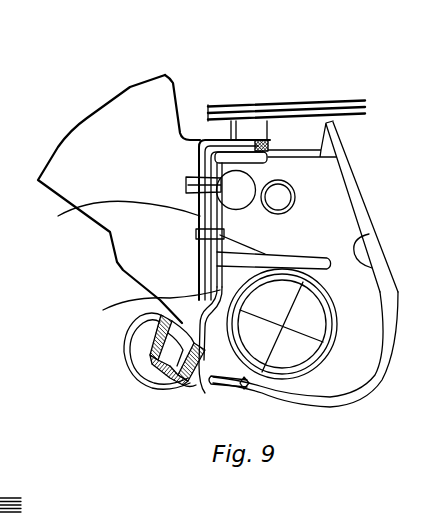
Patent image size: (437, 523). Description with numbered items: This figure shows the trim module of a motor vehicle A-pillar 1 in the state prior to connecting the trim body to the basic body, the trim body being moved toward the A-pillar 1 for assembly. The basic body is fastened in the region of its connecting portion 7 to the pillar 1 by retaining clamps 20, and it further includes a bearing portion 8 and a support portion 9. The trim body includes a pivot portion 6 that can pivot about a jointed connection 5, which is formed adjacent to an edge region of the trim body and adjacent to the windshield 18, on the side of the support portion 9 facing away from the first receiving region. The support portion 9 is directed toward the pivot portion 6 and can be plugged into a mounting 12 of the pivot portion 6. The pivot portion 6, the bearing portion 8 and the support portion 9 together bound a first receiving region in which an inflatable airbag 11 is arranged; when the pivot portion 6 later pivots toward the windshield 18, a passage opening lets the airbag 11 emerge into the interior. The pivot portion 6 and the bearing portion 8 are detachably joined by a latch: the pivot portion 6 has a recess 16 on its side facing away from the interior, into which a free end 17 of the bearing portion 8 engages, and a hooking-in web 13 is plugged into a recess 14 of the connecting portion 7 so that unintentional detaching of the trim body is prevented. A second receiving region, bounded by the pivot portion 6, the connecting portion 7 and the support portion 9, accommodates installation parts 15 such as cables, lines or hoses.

The A-pillar 1 is at (48, 130).
The jointed connection 5 is at (350, 131).
The pivot portion 6 is at (372, 213).
The connecting portion 7 is at (60, 218).
The bearing portion 8 is at (156, 314).
The support portion 9 is at (300, 258).
The airbag 11 is at (320, 322).
The mounting 12 is at (363, 271).
The hooking-in web 13 is at (312, 158).
The recess 14 is at (267, 140).
The installation parts 15 is at (240, 203).
The recess 16 is at (245, 383).
The free end 17 is at (203, 380).
The windshield 18 is at (340, 102).
The retaining clamps 20 is at (195, 185).